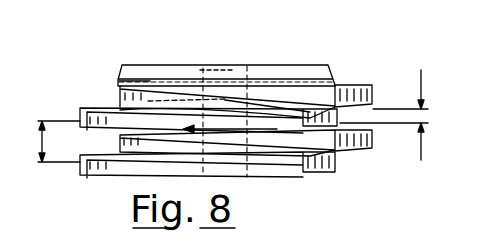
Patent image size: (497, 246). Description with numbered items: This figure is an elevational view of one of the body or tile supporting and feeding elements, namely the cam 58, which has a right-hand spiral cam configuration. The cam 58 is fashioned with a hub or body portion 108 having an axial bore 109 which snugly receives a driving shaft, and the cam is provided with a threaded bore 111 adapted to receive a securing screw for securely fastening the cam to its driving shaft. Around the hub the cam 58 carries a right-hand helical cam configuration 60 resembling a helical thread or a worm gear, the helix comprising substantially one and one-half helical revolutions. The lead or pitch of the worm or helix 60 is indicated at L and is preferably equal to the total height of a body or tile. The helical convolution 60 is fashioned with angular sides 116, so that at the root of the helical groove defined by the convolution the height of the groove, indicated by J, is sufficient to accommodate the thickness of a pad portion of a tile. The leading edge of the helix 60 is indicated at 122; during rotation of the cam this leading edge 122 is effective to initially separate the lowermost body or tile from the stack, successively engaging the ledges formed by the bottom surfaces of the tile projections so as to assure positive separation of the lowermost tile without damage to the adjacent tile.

The cam 58 is at (347, 66).
The right-hand helical cam configuration 60 is at (372, 141).
The hub or body portion 108 is at (316, 45).
The axial bore 109 is at (228, 69).
The threaded bore 111 is at (160, 74).
The angular sides 116 is at (100, 133).
The leading edge 122 is at (117, 90).
The height of the groove J is at (424, 113).
The lead or pitch of the helix L is at (59, 141).